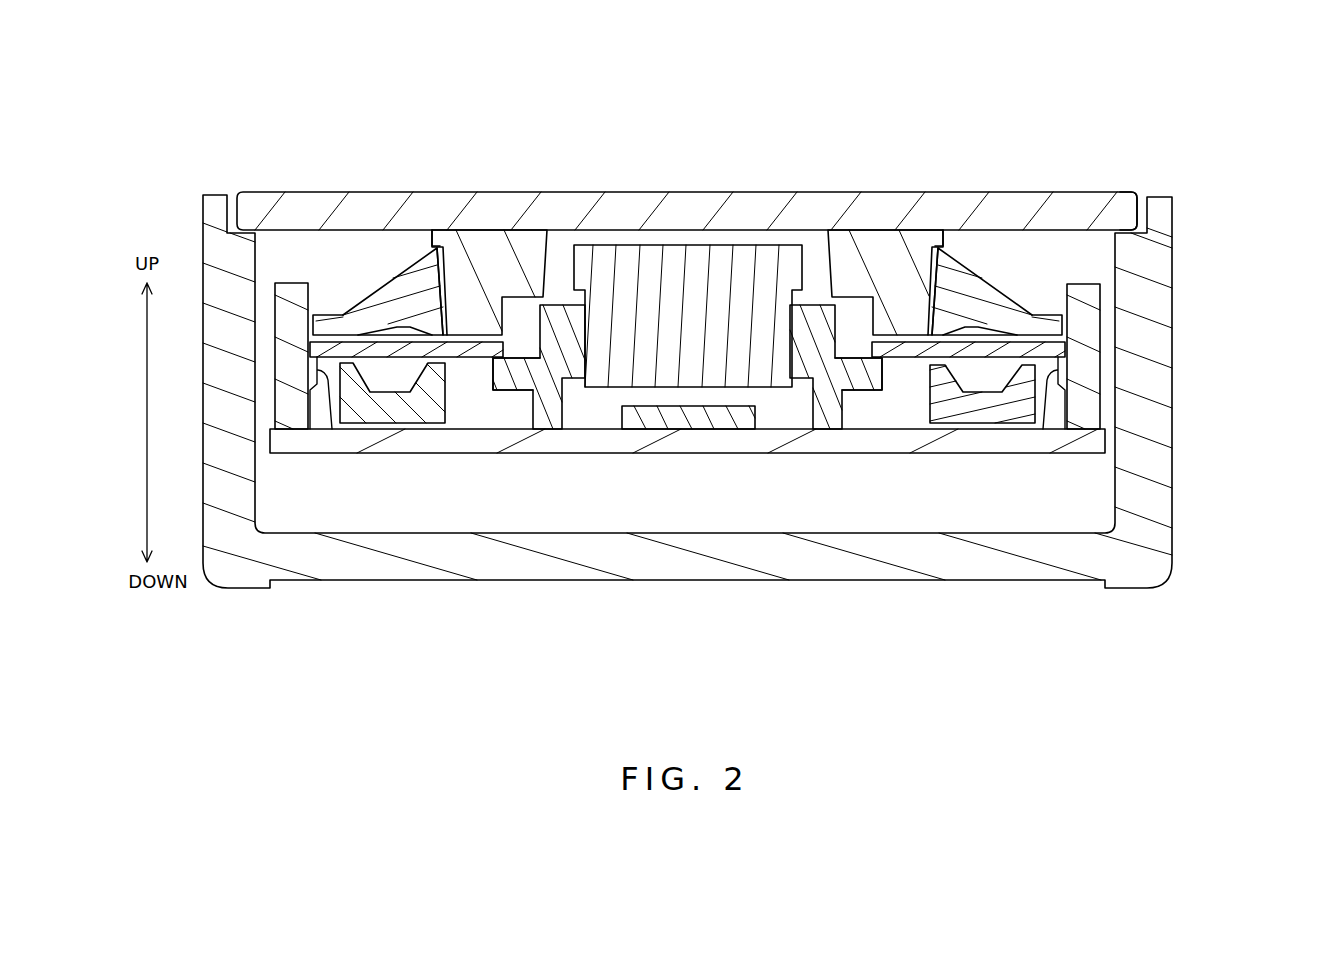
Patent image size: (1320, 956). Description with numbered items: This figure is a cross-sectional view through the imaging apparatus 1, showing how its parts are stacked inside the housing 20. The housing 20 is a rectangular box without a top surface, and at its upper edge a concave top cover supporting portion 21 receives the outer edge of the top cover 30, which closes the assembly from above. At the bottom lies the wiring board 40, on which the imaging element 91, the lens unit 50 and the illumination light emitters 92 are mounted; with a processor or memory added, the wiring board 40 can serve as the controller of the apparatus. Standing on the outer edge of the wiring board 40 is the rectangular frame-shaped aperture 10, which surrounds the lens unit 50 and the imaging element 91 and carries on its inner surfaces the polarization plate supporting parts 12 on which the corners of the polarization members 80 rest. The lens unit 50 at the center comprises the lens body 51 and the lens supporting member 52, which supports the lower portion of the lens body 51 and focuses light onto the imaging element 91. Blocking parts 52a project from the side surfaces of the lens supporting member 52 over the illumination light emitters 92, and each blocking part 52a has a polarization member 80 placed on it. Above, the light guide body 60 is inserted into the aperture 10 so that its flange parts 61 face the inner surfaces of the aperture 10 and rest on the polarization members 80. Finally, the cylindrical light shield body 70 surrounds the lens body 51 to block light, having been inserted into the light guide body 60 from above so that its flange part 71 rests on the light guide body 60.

The imaging apparatus 1 is at (177, 164).
The aperture 10 is at (294, 272).
The polarization plate supporting part 12 is at (332, 405).
The housing 20 is at (1186, 303).
The top cover supporting portion 21 is at (1145, 212).
The top cover 30 is at (1005, 200).
The wiring board 40 is at (480, 447).
The lens unit 50 is at (691, 389).
The lens body 51 is at (747, 250).
The lens supporting member 52 is at (830, 373).
The blocking part 52a is at (515, 380).
The light guide body 60 is at (408, 259).
The flange part 61 is at (330, 322).
The light shield body 70 is at (495, 219).
The flange part 71 is at (438, 232).
The polarization member 80 is at (478, 348).
The imaging element 91 is at (677, 415).
The illumination light emitter 92 is at (403, 413).